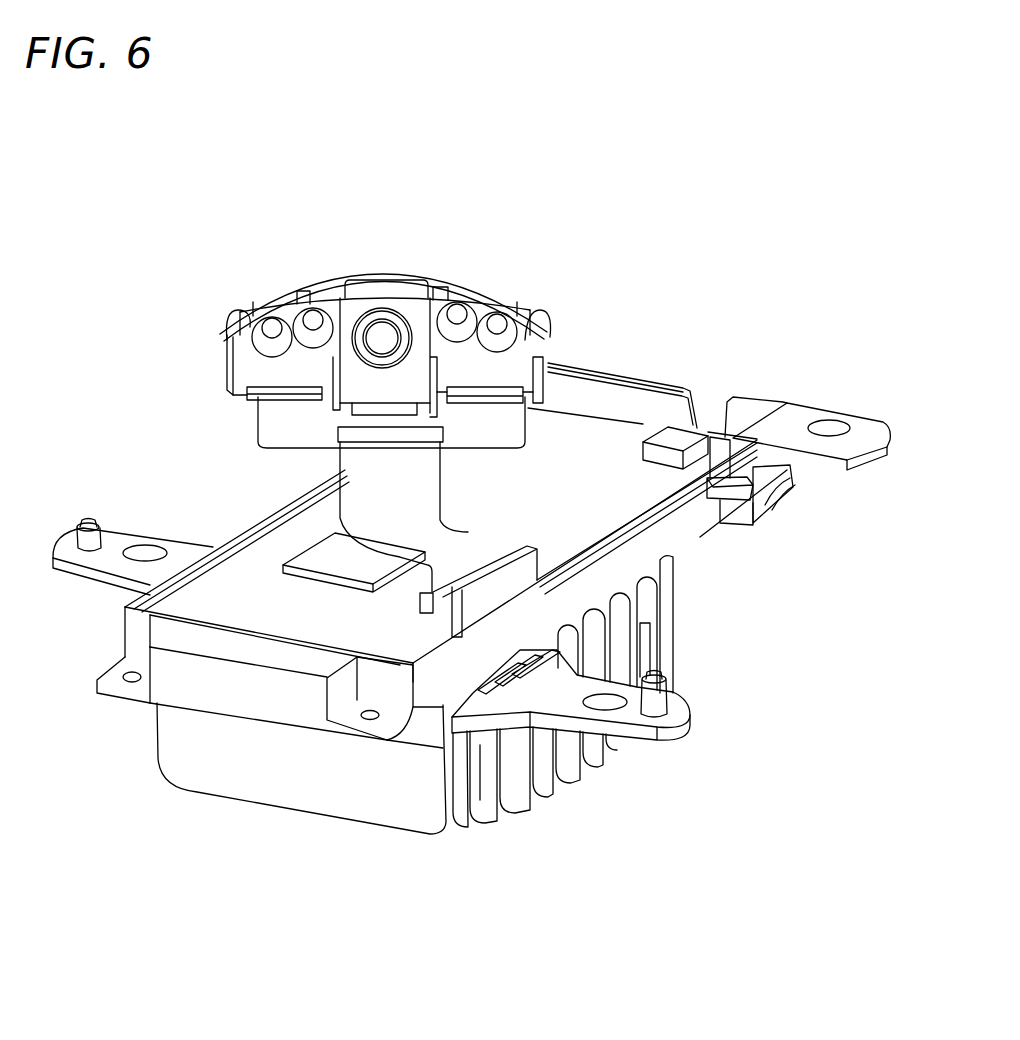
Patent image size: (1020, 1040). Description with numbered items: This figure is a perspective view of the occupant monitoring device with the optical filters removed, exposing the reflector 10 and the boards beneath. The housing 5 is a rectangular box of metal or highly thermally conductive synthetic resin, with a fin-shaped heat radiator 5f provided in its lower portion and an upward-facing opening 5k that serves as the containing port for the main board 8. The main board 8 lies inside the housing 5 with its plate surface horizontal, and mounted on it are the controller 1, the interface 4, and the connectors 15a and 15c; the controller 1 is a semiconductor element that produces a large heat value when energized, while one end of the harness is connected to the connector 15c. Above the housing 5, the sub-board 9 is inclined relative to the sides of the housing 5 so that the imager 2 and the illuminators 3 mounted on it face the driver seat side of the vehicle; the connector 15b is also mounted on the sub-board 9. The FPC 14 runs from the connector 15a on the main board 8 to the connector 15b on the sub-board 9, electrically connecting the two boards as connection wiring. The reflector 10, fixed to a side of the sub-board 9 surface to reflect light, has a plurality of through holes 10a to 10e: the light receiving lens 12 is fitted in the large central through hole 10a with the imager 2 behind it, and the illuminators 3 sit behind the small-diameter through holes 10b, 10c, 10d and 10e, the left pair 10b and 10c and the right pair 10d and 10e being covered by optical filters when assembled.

The controller 1 is at (307, 547).
The imager 2 is at (382, 272).
The illuminators 3 is at (272, 330).
The interface 4 is at (627, 480).
The housing 5 is at (123, 635).
The heat radiator 5f is at (713, 710).
The opening 5k is at (627, 403).
The main board 8 is at (253, 573).
The sub-board 9 is at (258, 432).
The reflector 10 is at (228, 372).
The through hole 10a is at (397, 317).
The through hole 10b is at (300, 303).
The through hole 10c is at (233, 337).
The through hole 10d is at (437, 300).
The through hole 10e is at (537, 333).
The light receiving lens 12 is at (380, 335).
The FPC 14 is at (443, 497).
The connector 15a is at (490, 560).
The connector 15b is at (443, 435).
The connector 15c is at (692, 425).